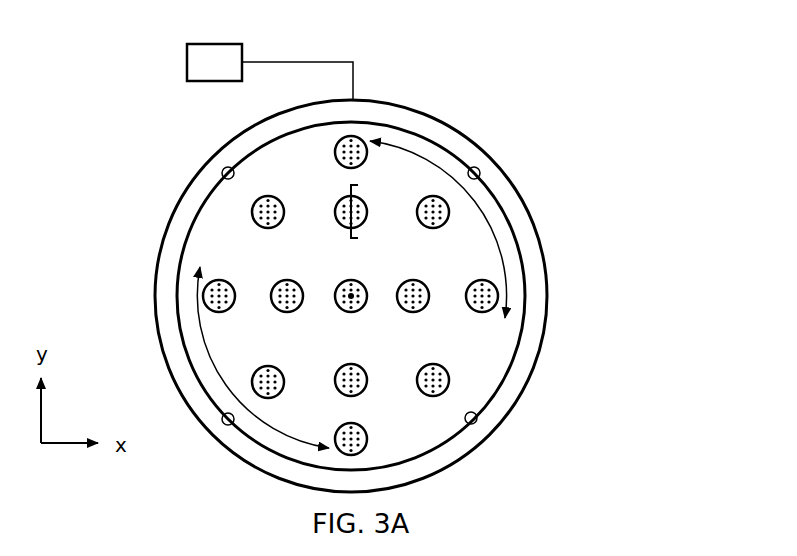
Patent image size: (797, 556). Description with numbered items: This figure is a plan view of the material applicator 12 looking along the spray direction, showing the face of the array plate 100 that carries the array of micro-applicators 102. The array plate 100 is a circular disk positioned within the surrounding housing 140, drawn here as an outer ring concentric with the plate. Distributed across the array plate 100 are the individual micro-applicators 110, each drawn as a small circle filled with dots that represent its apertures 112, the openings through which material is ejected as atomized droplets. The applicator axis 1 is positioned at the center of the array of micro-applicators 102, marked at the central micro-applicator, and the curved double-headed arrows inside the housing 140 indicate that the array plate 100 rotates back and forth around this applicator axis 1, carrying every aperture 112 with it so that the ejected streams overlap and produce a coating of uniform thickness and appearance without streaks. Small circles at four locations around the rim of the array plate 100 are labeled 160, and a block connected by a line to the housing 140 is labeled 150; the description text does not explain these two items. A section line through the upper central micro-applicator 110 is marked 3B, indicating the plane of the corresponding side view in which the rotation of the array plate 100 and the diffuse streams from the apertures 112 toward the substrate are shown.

The material applicator 12 is at (575, 157).
The array plate 100 is at (427, 139).
The array of micro-applicators 102 is at (206, 237).
The micro-applicator 110 is at (234, 282).
The aperture 112 is at (267, 366).
The applicator axis 1 is at (348, 299).
The housing 140 is at (547, 241).
The controller 150 is at (183, 54).
The alignment feature 160 is at (475, 422).
The section line 3B is at (362, 185).